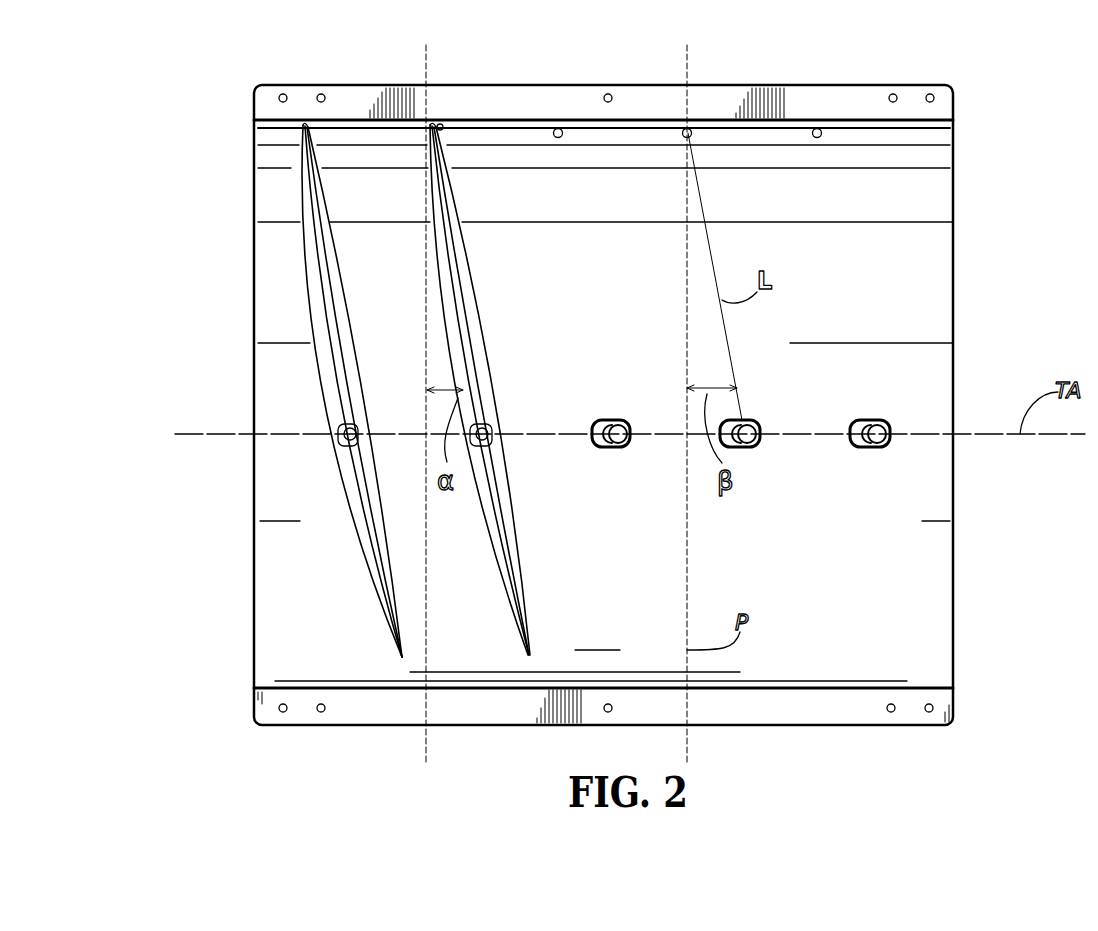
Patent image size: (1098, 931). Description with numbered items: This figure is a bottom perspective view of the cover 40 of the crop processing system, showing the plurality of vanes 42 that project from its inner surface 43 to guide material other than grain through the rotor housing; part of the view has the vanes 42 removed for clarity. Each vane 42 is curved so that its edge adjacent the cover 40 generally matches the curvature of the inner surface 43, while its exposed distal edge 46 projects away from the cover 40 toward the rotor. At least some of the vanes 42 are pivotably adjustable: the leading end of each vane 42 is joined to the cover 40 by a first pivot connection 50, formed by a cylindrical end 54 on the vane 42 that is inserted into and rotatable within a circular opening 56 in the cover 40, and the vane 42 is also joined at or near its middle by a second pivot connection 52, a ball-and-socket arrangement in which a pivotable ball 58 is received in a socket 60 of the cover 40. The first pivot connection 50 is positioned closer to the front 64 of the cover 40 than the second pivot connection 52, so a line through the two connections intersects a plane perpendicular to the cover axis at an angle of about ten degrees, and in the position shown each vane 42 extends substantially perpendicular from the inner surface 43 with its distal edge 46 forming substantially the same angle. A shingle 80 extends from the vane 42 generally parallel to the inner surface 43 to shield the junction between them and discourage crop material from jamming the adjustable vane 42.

The cover 40 is at (953, 243).
The vane 42 is at (391, 390).
The inner surface 43 is at (953, 343).
The distal edge 46 is at (465, 333).
The first pivot connection 50 is at (442, 125).
The second pivot connection 52 is at (338, 445).
The cylindrical end 54 is at (254, 192).
The circular opening 56 is at (558, 129).
The ball 58 is at (604, 421).
The socket 60 is at (600, 448).
The front 64 is at (254, 362).
The shingle 80 is at (300, 293).